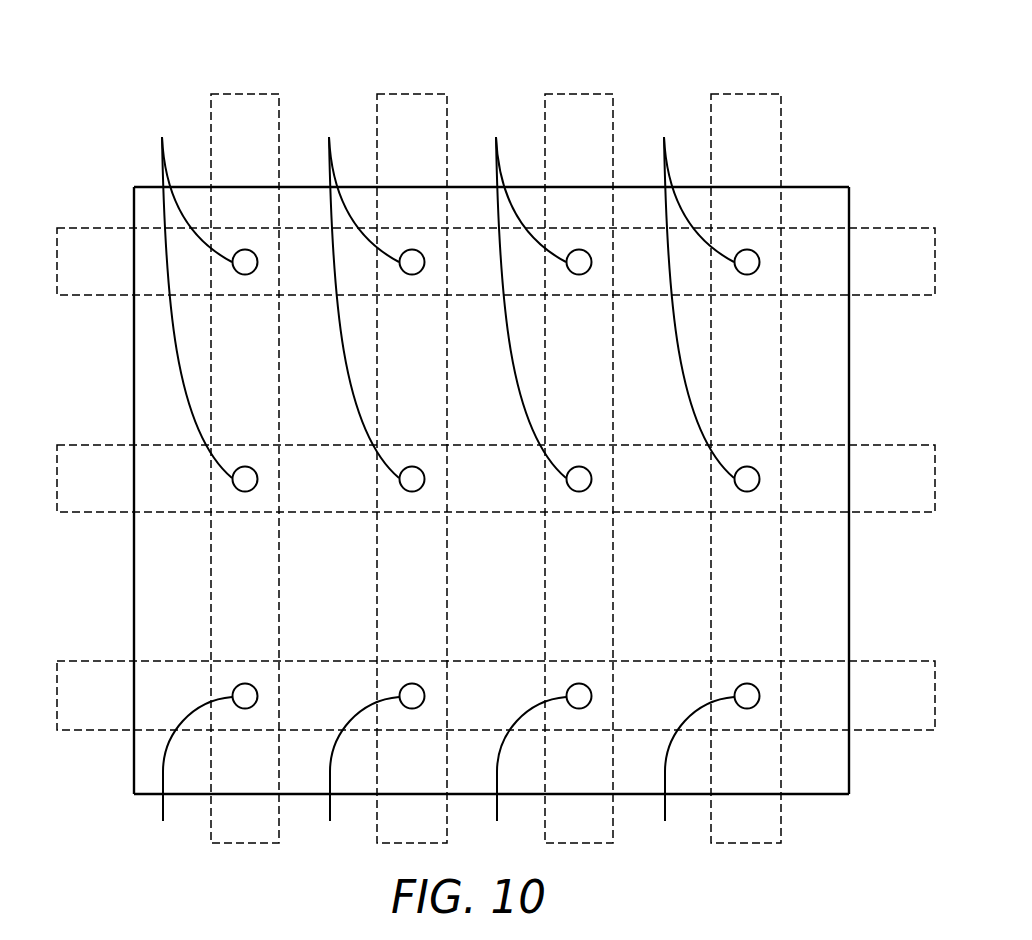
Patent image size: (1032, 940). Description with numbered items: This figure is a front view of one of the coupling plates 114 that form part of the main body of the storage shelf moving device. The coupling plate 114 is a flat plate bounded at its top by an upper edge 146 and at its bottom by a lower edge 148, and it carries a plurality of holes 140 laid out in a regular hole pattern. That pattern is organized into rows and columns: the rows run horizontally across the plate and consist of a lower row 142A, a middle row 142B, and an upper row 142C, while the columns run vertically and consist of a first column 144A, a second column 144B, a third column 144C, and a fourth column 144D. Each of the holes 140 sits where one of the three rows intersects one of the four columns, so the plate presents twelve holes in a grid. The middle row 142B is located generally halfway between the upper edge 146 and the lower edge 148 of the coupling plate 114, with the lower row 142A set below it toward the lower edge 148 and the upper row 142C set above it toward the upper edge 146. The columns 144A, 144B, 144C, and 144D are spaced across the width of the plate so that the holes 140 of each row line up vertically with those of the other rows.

The coupling plate 114 is at (842, 187).
The holes 140 is at (453, 480).
The lower row 142A is at (57, 694).
The middle row 142B is at (57, 478).
The upper row 142C is at (57, 261).
The first column 144A is at (245, 92).
The second column 144B is at (412, 92).
The third column 144C is at (579, 92).
The fourth column 144D is at (746, 92).
The upper edge 146 is at (136, 187).
The lower edge 148 is at (849, 794).